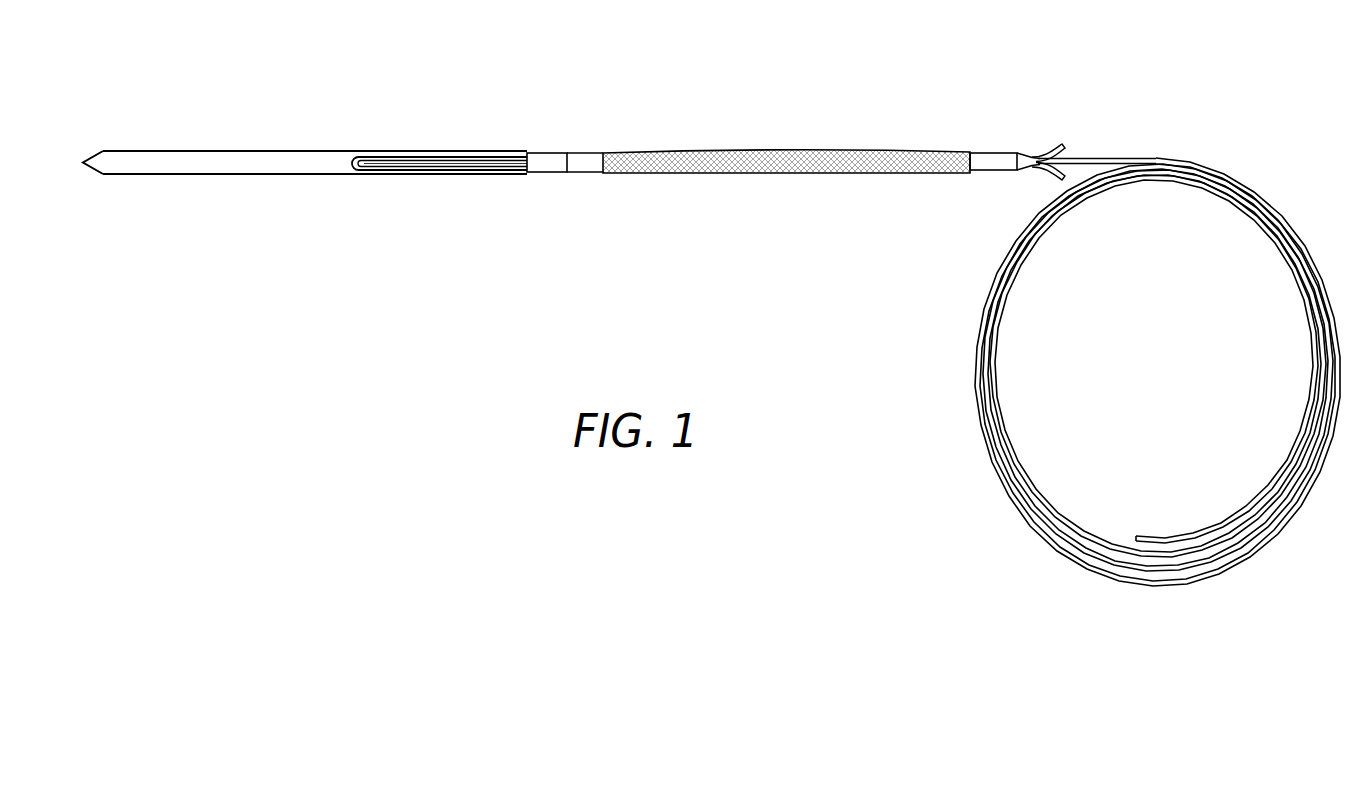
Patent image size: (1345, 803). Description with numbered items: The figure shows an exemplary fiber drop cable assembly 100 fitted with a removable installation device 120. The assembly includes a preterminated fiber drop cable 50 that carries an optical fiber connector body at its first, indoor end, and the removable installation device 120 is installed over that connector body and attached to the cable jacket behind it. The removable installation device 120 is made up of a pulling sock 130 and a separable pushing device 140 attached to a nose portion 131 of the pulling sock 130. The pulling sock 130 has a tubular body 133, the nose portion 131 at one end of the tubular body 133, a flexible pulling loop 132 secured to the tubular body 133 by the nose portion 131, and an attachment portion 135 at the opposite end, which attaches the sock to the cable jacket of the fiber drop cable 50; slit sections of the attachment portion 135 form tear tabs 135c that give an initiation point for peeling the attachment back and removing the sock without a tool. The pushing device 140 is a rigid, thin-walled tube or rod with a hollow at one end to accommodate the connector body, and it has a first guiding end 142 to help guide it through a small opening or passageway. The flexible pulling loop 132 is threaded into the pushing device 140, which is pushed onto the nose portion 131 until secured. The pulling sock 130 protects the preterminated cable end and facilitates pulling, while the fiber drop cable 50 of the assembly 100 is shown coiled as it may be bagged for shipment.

The fiber drop cable assembly 100 is at (1134, 37).
The pushing device 140 is at (220, 177).
The first guiding end 142 is at (84, 158).
The flexible pulling loop 132 is at (427, 167).
The nose portion 131 is at (545, 160).
The removable installation device 120 is at (702, 112).
The pulling sock 130 is at (776, 185).
The tubular body 133 is at (705, 165).
The attachment portion 135 is at (990, 160).
The tear tabs 135c is at (1053, 152).
The fiber drop cable 50 is at (1255, 172).